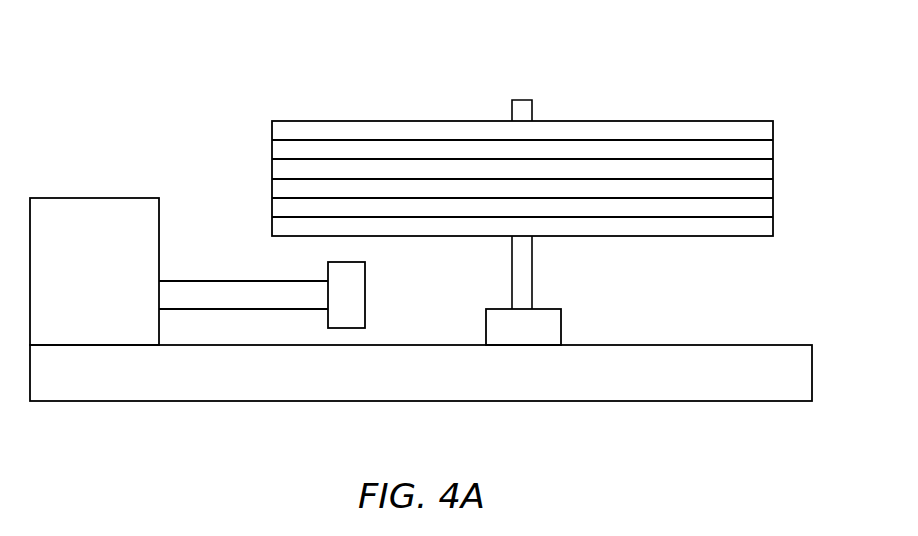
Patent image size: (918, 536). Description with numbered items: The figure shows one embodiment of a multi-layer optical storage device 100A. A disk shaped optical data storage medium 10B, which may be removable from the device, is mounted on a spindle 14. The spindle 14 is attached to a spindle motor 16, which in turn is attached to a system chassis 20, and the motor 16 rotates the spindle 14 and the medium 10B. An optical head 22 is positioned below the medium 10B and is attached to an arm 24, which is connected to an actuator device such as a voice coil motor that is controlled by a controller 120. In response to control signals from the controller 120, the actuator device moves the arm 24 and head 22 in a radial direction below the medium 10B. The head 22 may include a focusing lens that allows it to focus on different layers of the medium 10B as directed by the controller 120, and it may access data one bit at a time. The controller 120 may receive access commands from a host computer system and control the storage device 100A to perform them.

The multi-layer optical storage device 100A is at (170, 56).
The disk shaped optical data storage medium 10B is at (400, 121).
The spindle 14 is at (532, 281).
The spindle motor 16 is at (562, 328).
The system chassis 20 is at (533, 401).
The controller 120 is at (117, 287).
The arm 24 is at (253, 280).
The optical head 22 is at (365, 291).